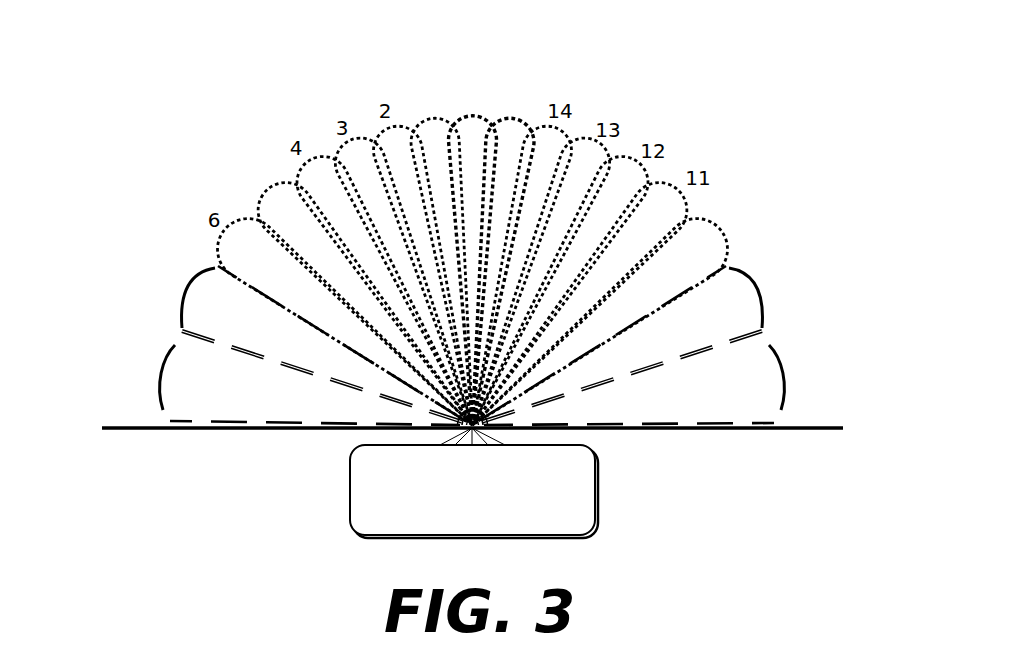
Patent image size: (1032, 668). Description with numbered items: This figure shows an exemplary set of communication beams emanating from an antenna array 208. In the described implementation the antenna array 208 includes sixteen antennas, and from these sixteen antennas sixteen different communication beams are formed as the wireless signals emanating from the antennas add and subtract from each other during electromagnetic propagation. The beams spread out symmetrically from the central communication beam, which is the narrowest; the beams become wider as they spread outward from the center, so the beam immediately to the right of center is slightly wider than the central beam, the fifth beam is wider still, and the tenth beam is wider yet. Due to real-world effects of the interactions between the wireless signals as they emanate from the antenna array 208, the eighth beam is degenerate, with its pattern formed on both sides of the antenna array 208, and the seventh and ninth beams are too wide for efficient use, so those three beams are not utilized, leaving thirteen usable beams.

The antenna array 208 is at (452, 518).